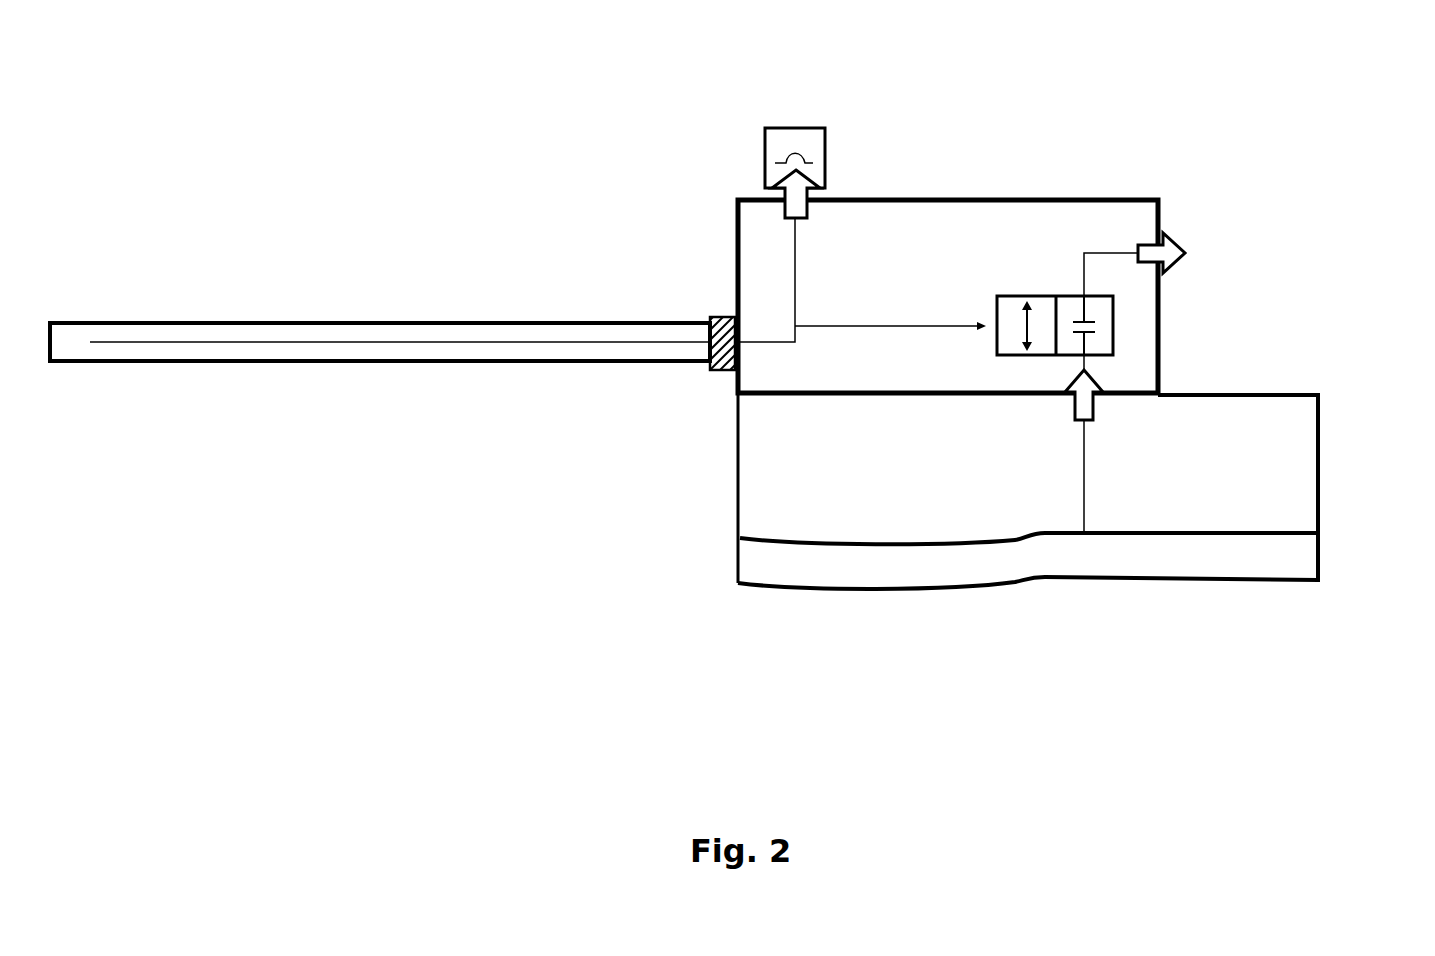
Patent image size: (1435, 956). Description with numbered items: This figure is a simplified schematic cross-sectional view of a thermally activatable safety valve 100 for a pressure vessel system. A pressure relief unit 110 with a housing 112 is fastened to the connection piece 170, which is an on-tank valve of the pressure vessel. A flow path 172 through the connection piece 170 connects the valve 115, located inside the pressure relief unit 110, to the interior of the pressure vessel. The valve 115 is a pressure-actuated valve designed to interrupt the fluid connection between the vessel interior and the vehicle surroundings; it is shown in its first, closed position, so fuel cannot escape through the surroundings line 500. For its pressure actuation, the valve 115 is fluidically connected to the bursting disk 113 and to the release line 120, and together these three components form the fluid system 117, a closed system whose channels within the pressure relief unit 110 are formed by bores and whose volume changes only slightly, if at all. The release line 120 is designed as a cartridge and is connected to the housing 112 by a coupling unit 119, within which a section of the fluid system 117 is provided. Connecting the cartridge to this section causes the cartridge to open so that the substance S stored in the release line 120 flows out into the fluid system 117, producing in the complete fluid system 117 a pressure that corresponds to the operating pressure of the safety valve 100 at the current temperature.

The safety valve 100 is at (583, 462).
The release line 120 is at (420, 322).
The substance S is at (248, 338).
The coupling unit 119 is at (710, 320).
The pressure relief unit 110 is at (1193, 328).
The housing 112 is at (900, 197).
The bursting disk 113 is at (805, 127).
The fluid system 117 is at (903, 326).
The valve 115 is at (1038, 293).
The surroundings line 500 is at (1167, 240).
The flow path 172 is at (1090, 405).
The connection piece 170 is at (1293, 460).